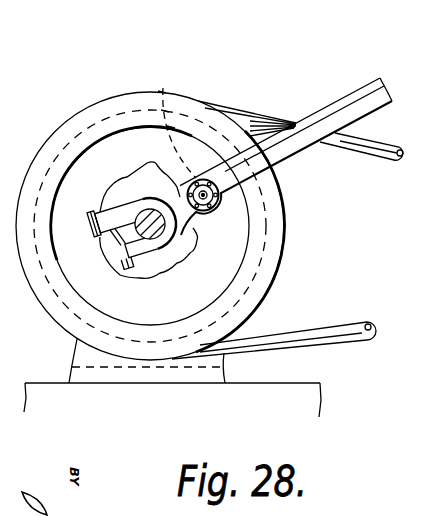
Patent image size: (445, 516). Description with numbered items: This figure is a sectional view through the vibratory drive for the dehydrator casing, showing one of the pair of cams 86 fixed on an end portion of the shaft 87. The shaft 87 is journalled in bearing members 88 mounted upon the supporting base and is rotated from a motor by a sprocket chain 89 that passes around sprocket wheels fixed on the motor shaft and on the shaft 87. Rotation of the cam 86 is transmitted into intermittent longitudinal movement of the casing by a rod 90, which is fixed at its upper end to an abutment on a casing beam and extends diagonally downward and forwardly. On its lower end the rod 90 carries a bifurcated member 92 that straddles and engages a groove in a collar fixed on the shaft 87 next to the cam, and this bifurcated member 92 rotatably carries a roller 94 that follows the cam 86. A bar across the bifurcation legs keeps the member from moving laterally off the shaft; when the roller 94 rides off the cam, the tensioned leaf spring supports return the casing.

The cams 86 is at (120, 188).
The shaft 87 is at (193, 233).
The bearing members 88 is at (227, 373).
The sprocket chain 89 is at (245, 118).
The rods 90 is at (345, 97).
The bifurcated member 92 is at (157, 267).
The rollers 94 is at (159, 80).